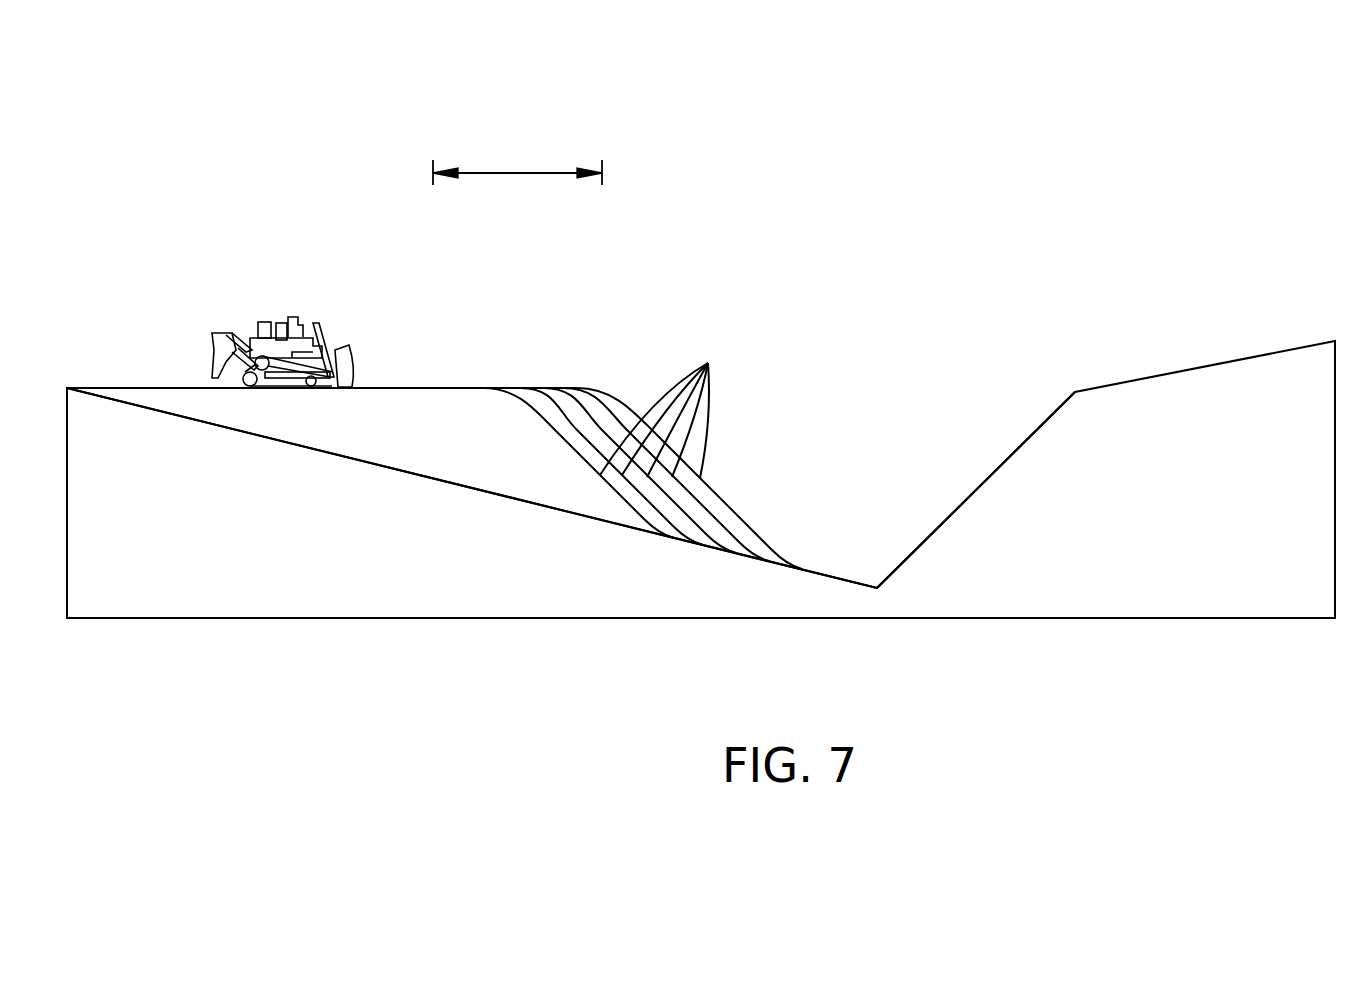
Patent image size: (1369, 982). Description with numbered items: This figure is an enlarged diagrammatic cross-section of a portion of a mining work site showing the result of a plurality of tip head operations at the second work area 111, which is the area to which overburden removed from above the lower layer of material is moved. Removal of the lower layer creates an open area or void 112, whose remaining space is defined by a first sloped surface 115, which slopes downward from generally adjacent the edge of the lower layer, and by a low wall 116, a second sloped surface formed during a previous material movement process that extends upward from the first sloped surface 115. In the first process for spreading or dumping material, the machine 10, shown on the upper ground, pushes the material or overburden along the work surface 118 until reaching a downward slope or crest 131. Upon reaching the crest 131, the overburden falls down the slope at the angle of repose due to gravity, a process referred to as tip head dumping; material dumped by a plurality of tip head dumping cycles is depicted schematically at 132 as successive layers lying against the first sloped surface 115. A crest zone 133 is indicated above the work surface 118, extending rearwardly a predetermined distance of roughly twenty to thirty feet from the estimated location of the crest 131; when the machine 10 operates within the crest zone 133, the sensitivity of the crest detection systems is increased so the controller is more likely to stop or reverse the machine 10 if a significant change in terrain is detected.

The machine 10 is at (312, 310).
The second work area 111 is at (995, 270).
The void 112 is at (878, 353).
The first sloped surface 115 is at (420, 473).
The low wall 116 is at (977, 487).
The work surface 118 is at (432, 388).
The crest 131 is at (571, 388).
The material dumped by tip head dumping cycles 132 is at (668, 403).
The crest zone 133 is at (523, 170).